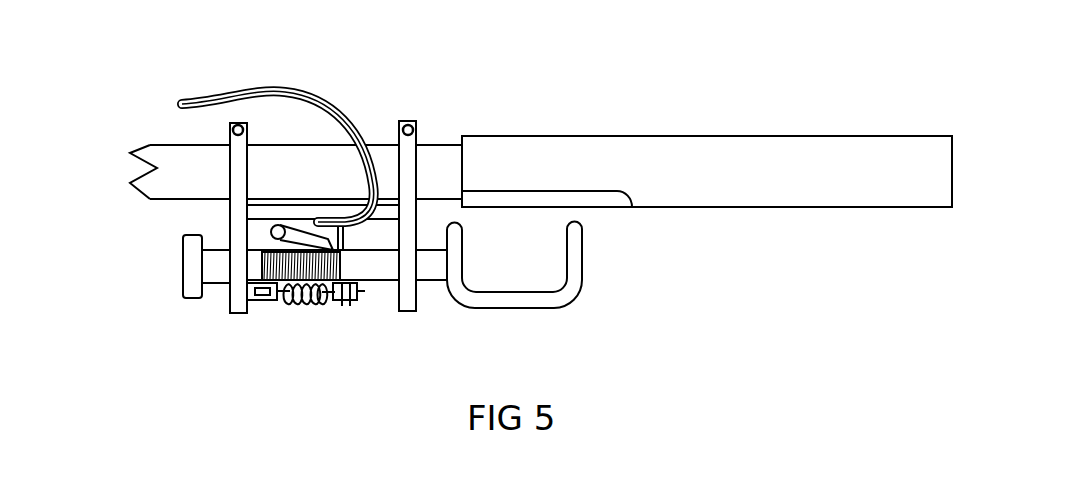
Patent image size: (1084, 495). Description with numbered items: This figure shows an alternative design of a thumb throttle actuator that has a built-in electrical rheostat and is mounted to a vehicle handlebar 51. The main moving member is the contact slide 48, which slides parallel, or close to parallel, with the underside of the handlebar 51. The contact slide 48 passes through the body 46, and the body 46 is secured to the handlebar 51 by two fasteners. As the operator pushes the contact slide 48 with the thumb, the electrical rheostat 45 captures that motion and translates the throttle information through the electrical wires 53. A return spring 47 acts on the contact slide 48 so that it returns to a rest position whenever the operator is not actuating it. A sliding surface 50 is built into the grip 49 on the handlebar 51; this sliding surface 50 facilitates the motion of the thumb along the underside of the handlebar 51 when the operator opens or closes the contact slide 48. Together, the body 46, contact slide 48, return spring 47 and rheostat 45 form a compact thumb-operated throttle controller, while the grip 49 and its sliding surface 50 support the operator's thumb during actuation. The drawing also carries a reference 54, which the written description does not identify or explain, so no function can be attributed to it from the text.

The electrical rheostat 45 is at (348, 303).
The body 46 is at (410, 293).
The return spring 47 is at (297, 305).
The contact slide 48 is at (568, 280).
The grip 49 is at (710, 180).
The sliding surface 50 is at (567, 198).
The handlebar 51 is at (440, 162).
The electrical wires 53 is at (247, 127).
The cable 54 is at (267, 92).